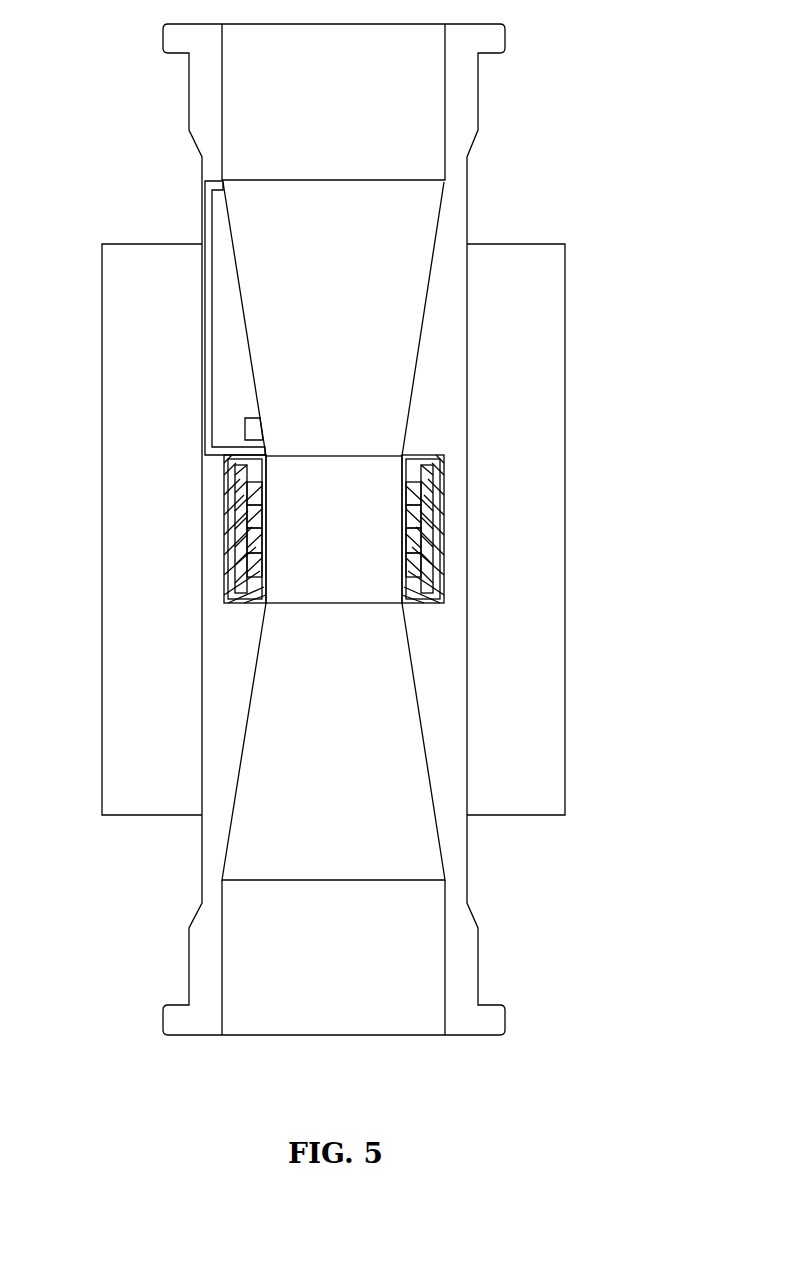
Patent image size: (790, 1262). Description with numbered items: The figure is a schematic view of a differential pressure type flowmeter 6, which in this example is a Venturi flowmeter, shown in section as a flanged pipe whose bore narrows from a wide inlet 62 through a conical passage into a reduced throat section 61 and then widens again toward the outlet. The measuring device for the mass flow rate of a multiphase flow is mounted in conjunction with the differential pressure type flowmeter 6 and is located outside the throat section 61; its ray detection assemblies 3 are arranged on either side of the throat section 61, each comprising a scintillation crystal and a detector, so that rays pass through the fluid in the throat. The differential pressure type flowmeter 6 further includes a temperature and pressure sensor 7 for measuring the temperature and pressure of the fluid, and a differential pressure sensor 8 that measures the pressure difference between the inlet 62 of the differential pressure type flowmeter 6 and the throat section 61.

The ray detection assembly 3 is at (420, 512).
The differential pressure type flowmeter 6 is at (417, 377).
The throat section 61 is at (362, 455).
The inlet 62 is at (330, 180).
The temperature and pressure sensor 7 is at (247, 428).
The differential pressure sensor 8 is at (207, 318).